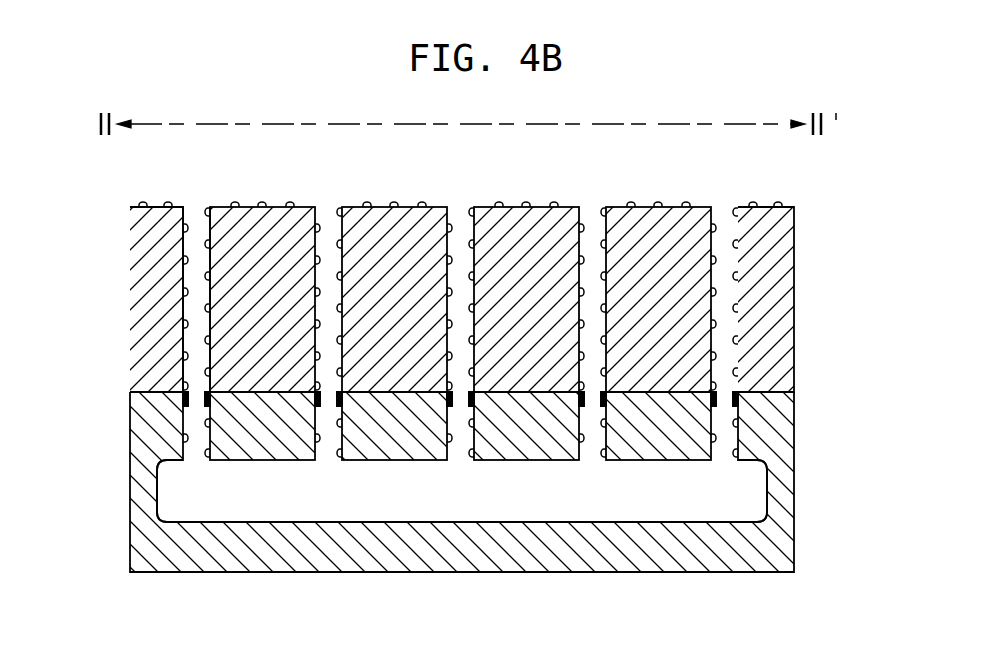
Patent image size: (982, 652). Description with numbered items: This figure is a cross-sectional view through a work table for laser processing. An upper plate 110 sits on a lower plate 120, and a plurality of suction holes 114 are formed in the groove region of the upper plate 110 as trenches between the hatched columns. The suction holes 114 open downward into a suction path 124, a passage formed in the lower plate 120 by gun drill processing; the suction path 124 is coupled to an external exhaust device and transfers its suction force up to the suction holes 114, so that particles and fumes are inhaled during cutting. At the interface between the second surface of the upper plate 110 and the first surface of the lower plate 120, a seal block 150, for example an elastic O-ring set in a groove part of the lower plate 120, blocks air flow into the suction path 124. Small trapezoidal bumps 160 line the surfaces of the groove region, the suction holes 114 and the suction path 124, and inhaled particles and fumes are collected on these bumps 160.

The upper plate 110 is at (795, 285).
The suction holes 114 is at (189, 223).
The lower plate 120 is at (797, 490).
The suction path 124 is at (387, 495).
The seal block 150 is at (181, 399).
The bumps 160 is at (143, 205).